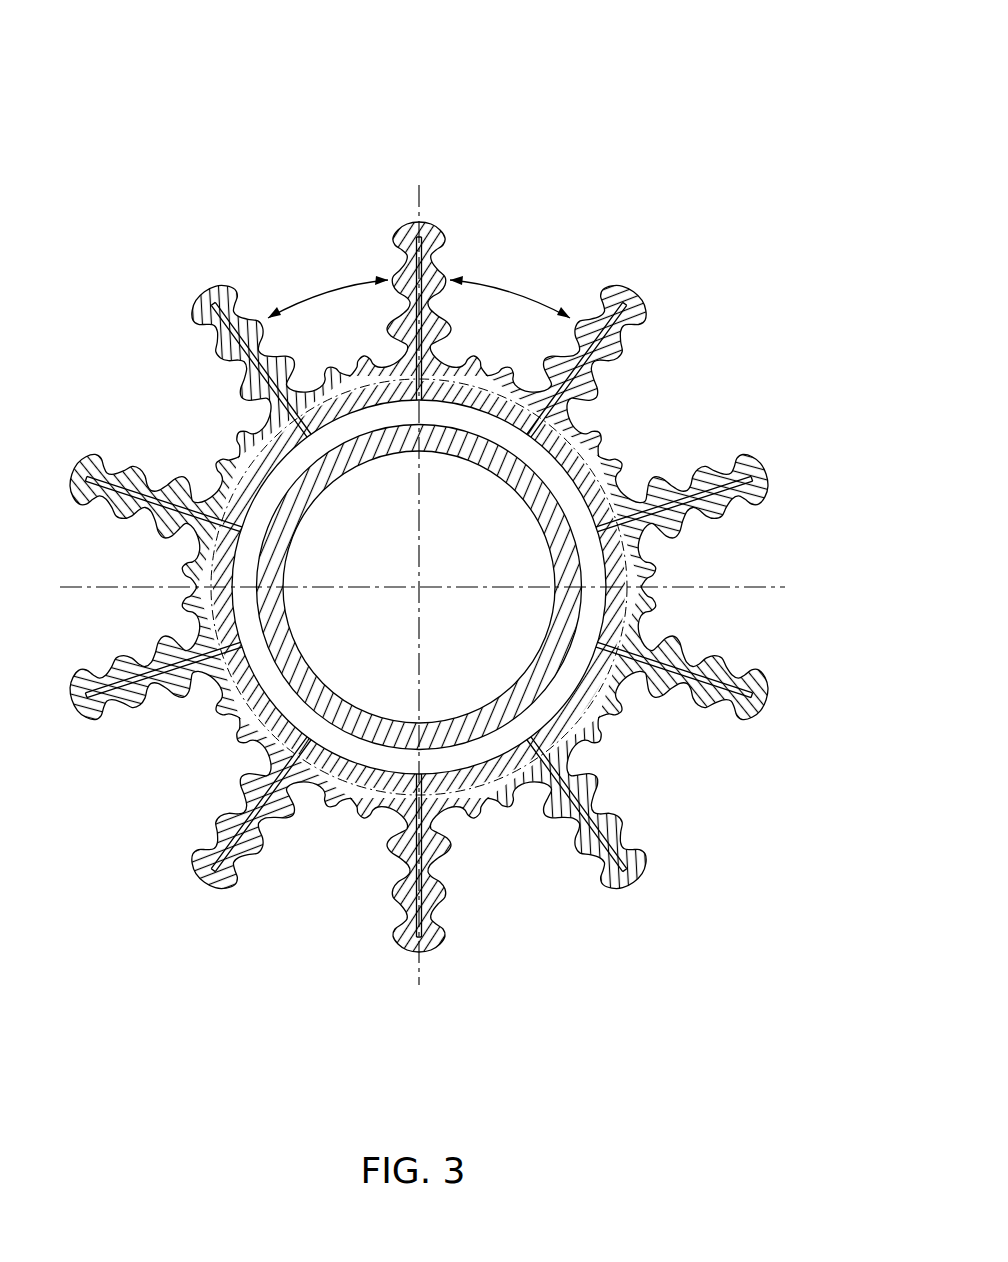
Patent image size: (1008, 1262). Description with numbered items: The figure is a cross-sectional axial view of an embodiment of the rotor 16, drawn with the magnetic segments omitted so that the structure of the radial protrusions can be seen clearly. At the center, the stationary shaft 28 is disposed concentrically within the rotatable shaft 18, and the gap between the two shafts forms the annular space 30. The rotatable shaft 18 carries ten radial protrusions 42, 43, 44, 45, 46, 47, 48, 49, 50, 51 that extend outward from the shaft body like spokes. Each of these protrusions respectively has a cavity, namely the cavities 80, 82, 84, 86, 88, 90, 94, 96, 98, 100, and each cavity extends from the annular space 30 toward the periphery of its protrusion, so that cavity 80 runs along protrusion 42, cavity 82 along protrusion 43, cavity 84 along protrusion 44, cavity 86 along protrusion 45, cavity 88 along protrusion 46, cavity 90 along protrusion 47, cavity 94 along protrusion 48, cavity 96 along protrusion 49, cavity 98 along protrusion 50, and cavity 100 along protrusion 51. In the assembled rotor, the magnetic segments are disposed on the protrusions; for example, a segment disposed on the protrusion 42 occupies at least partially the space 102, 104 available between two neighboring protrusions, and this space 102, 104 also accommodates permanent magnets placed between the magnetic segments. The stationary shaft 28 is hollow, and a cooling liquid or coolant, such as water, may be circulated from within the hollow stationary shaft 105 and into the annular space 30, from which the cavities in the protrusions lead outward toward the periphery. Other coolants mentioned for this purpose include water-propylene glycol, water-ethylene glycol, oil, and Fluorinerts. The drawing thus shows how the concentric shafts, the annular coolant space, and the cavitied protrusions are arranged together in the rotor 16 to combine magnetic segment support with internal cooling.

The heat exchanger tube assembly 16 is at (748, 62).
The rotatable shaft 18 is at (420, 561).
The stationary shaft 28 is at (348, 713).
The annular space 30 is at (596, 573).
The protrusion 42 is at (432, 224).
The protrusion 43 is at (620, 290).
The protrusion 44 is at (752, 466).
The protrusion 45 is at (761, 676).
The protrusion 46 is at (648, 866).
The protrusion 47 is at (440, 936).
The protrusion 48 is at (213, 886).
The protrusion 49 is at (82, 708).
The protrusion 50 is at (80, 490).
The protrusion 51 is at (230, 283).
The cavity 80 is at (423, 252).
The cavity 82 is at (638, 303).
The cavity 84 is at (768, 478).
The cavity 86 is at (767, 692).
The cavity 88 is at (618, 852).
The cavity 90 is at (424, 872).
The cavity 94 is at (236, 862).
The cavity 96 is at (141, 706).
The cavity 98 is at (150, 498).
The cavity 100 is at (203, 309).
The space 102 is at (520, 295).
The space 104 is at (320, 295).
The hollow stationary shaft 105 is at (387, 530).